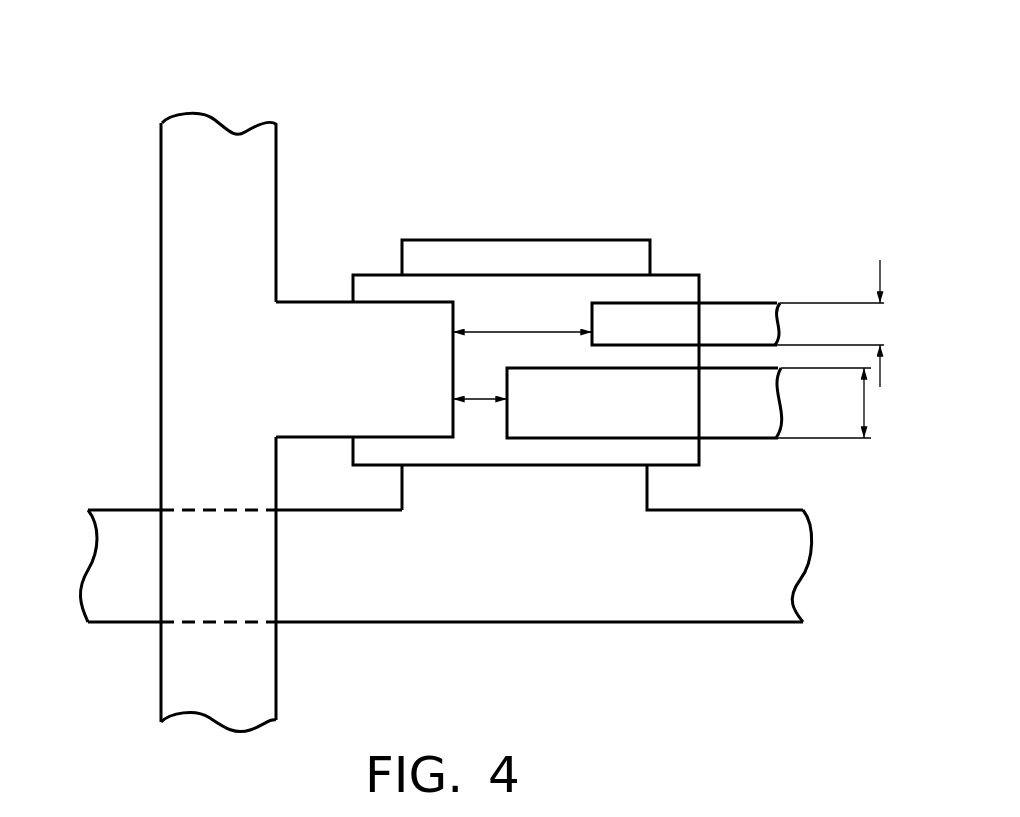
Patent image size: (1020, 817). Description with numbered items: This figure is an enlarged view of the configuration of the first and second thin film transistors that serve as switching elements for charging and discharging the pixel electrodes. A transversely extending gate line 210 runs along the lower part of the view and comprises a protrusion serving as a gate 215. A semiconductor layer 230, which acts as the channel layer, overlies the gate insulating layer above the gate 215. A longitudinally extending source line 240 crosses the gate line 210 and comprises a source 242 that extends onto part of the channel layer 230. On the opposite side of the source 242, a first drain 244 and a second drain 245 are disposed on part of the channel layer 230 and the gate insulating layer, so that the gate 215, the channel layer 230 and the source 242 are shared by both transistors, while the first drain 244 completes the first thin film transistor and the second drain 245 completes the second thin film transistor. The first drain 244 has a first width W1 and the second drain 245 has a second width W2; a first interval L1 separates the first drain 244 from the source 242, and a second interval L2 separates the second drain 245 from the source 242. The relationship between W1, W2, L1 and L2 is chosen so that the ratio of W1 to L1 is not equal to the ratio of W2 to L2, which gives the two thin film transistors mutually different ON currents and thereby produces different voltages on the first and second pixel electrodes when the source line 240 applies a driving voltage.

The gate line 210 is at (760, 612).
The gate 215 is at (526, 240).
The semiconductor layer 230 is at (675, 275).
The source line 240 is at (225, 145).
The source 242 is at (353, 368).
The first drain 244 is at (727, 422).
The second drain 245 is at (743, 313).
The first interval L1 is at (480, 400).
The second interval L2 is at (512, 332).
The first width W1 is at (838, 403).
The second width W2 is at (856, 323).